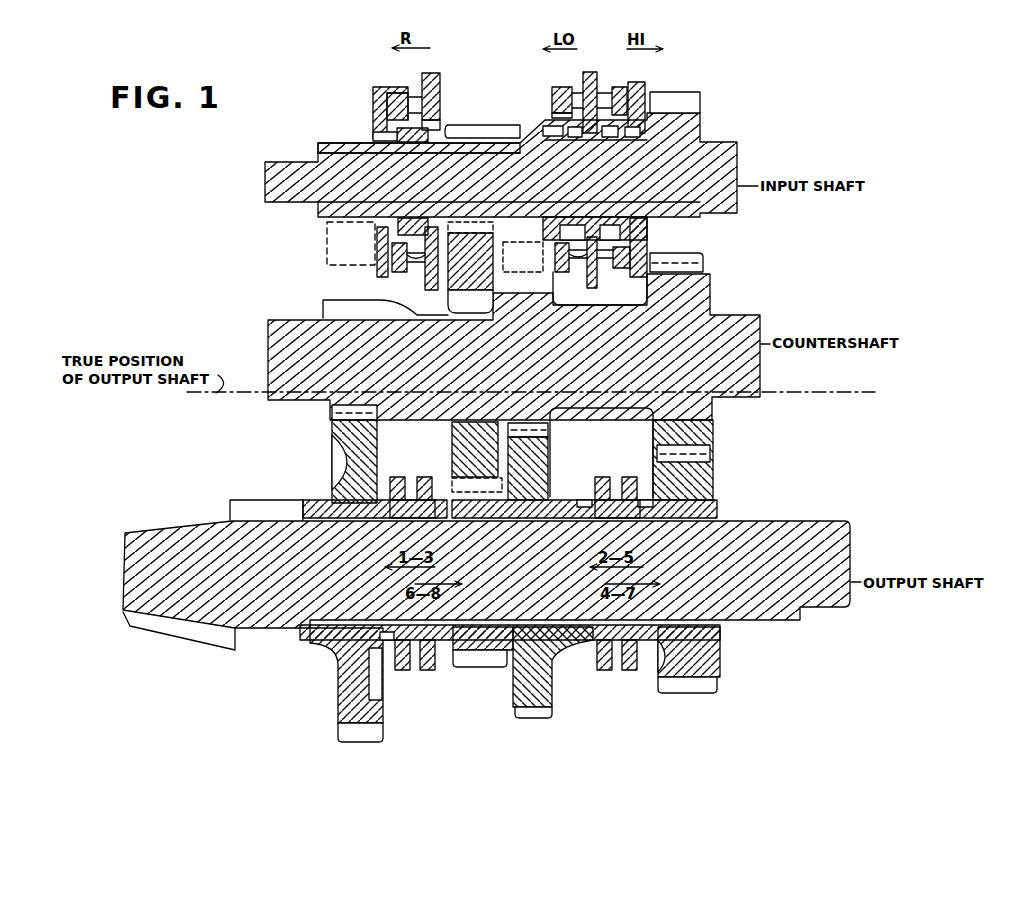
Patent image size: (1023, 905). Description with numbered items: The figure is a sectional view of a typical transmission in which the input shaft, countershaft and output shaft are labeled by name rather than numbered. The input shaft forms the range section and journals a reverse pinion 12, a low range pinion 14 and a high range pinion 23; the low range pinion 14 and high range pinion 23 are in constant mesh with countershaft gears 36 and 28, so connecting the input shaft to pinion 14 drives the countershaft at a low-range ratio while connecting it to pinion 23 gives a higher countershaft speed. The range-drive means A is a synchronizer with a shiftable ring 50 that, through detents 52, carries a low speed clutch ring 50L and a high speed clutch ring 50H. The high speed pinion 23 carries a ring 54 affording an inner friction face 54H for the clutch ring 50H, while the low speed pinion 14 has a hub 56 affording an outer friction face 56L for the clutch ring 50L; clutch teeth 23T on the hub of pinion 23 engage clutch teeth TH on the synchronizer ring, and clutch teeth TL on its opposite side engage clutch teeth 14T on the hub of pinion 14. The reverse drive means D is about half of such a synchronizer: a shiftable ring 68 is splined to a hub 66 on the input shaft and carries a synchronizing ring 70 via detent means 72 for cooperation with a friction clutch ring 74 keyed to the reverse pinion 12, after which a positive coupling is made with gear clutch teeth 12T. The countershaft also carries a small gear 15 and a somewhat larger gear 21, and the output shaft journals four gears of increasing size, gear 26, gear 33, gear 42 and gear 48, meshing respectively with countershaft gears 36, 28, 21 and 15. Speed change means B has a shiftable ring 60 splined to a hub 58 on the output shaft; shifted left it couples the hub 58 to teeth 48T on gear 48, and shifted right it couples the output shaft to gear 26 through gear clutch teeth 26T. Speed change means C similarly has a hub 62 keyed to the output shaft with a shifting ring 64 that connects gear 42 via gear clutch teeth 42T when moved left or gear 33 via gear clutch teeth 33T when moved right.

The reverse pinion 12 is at (336, 143).
The low range pinion 14 is at (471, 125).
The friction clutch ring 74 is at (373, 102).
The shiftable ring 68 is at (431, 80).
The hub 66 is at (420, 143).
The gear clutch teeth 12T is at (390, 142).
The low speed clutch ring 50L is at (558, 87).
The shiftable ring 50 is at (585, 75).
The high speed clutch ring 50H is at (619, 90).
The inner friction face 54H is at (640, 90).
The outer friction face 56L is at (553, 113).
The high range pinion 23 is at (700, 100).
The clutch teeth 14T is at (553, 137).
The clutch teeth TL is at (575, 138).
The clutch teeth TH is at (610, 138).
The clutch teeth 23T is at (632, 138).
The reverse drive means D is at (382, 68).
The range-drive means A is at (606, 62).
The gear 48 is at (327, 250).
The small countershaft gear 15 is at (336, 309).
The synchronizing ring 70 is at (392, 258).
The detent means 72 is at (418, 268).
The gear 42 is at (500, 288).
The hub 56 is at (560, 238).
The detents 52 is at (562, 272).
The ring 54 is at (638, 270).
The countershaft gear 28 is at (706, 279).
The countershaft gear 36 is at (452, 423).
The shiftable ring 60 is at (395, 477).
The countershaft gear 21 is at (551, 426).
The gear clutch teeth 33T is at (645, 499).
The gear clutch teeth 42T is at (585, 498).
The shifting ring 64 is at (600, 477).
The hub 58 is at (423, 504).
The hub 62 is at (628, 509).
The teeth 48T is at (388, 636).
The speed change means B is at (426, 679).
The gear clutch teeth 26T is at (457, 637).
The gear 26 is at (482, 661).
The speed change means C is at (625, 679).
The gear 33 is at (718, 684).